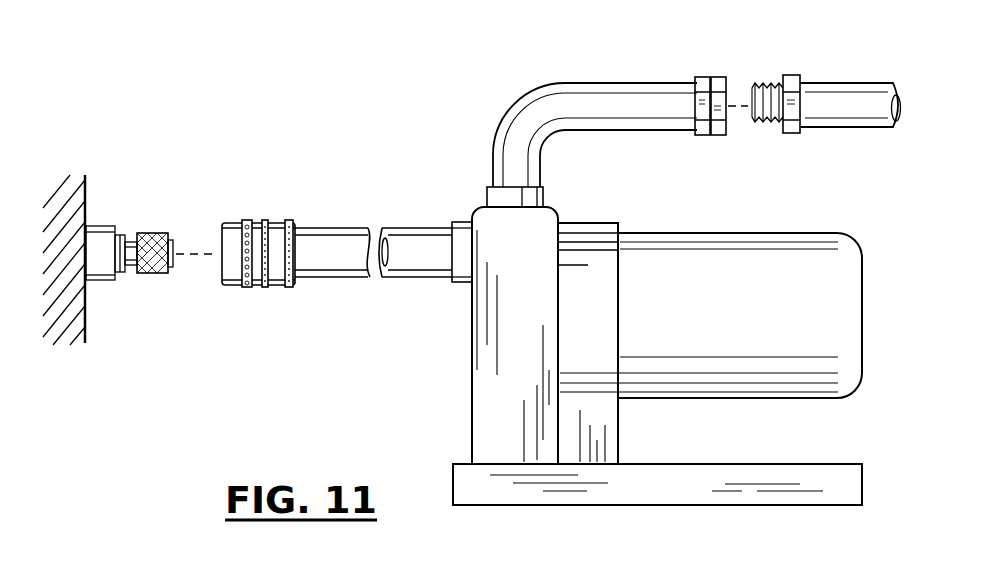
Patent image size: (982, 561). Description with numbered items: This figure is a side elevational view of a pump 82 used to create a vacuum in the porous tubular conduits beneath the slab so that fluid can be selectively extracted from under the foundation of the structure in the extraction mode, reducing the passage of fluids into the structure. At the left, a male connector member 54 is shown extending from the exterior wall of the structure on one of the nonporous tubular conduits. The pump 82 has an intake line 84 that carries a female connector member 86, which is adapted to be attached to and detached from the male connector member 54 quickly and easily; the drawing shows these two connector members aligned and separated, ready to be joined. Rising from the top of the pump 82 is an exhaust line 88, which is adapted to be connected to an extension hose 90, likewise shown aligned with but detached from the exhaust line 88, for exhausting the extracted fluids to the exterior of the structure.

The male connector member 54 is at (156, 230).
The pump 82 is at (687, 233).
The intake line 84 is at (330, 228).
The female connector member 86 is at (243, 287).
The exhaust line 88 is at (630, 83).
The extension hose 90 is at (827, 83).